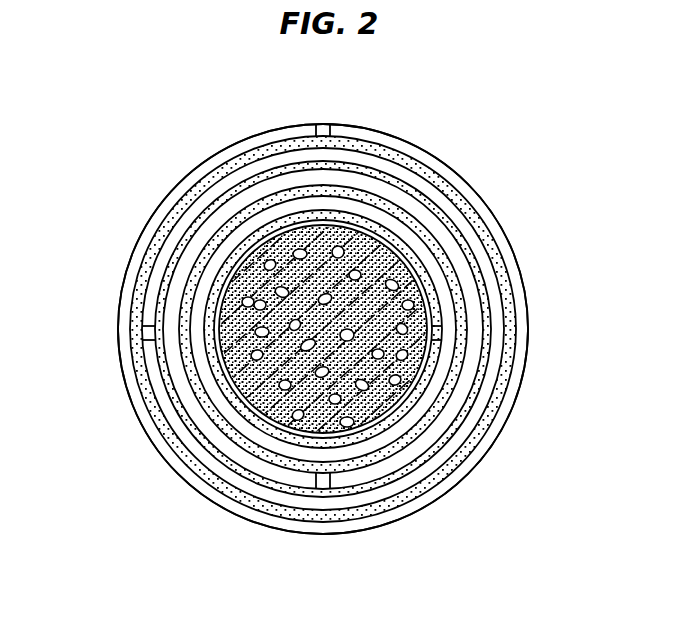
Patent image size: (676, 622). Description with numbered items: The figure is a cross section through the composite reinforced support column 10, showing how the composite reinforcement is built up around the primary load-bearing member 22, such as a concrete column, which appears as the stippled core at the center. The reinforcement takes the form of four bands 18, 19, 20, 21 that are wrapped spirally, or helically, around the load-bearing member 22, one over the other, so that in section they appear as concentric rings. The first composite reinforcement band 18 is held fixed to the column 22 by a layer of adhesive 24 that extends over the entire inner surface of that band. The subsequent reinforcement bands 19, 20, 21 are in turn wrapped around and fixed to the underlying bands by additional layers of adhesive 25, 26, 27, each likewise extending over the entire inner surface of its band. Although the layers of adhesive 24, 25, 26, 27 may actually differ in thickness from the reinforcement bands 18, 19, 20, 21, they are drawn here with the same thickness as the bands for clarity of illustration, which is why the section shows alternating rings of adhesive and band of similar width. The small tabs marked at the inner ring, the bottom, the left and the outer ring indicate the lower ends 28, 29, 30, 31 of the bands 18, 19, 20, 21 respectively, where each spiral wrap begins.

The composite reinforced support column 10 is at (146, 202).
The first composite reinforcement band 18 is at (443, 350).
The composite reinforcement band 19 is at (462, 373).
The composite reinforcement band 20 is at (473, 413).
The composite reinforcement band 21 is at (470, 465).
The primary load-bearing member 22 is at (395, 260).
The layer of adhesive 24 is at (415, 275).
The layer of adhesive 25 is at (447, 285).
The layer of adhesive 26 is at (478, 295).
The layer of adhesive 27 is at (517, 316).
The lower end of band 28 is at (442, 333).
The lower end of band 29 is at (323, 489).
The lower end of band 30 is at (142, 333).
The lower end of band 31 is at (325, 124).